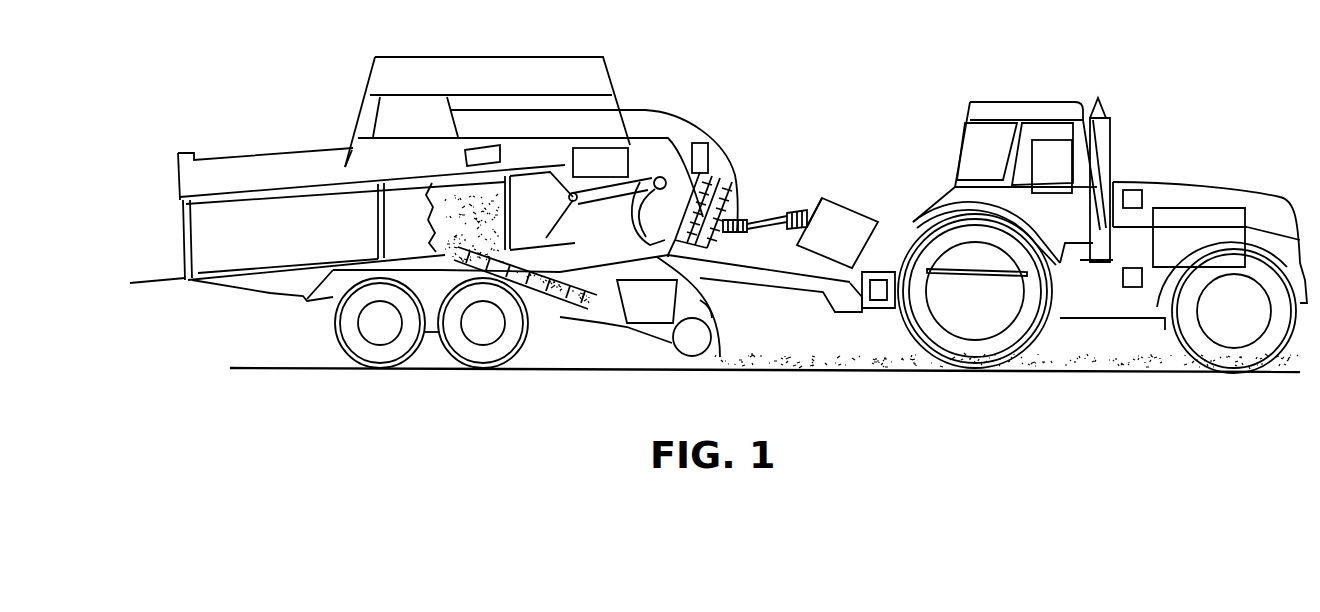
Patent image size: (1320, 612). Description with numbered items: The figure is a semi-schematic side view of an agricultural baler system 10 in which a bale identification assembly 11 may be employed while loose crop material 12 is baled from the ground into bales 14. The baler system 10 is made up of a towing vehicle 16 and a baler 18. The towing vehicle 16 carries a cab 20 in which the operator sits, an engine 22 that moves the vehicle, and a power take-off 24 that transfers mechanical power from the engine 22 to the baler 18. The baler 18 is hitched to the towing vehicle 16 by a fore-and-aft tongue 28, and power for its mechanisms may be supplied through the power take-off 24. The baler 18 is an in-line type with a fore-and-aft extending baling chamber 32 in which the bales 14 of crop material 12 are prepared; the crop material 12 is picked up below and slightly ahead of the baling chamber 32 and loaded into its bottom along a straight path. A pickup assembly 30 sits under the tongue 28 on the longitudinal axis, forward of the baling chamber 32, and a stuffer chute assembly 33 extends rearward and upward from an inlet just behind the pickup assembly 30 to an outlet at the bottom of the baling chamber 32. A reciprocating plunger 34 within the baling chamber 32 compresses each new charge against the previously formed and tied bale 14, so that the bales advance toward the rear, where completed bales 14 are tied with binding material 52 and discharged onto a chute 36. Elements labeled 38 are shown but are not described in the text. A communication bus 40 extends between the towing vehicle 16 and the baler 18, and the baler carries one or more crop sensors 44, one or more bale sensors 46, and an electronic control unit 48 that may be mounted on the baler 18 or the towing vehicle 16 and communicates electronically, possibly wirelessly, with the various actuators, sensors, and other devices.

The agricultural baler system 10 is at (1168, 58).
The bale identification assembly 11 is at (478, 143).
The crop material 12 is at (748, 346).
The bale 14 is at (292, 248).
The towing vehicle 16 is at (1208, 152).
The baler 18 is at (746, 114).
The cab 20 is at (1036, 92).
The engine 22 is at (1223, 217).
The power take-off 24 is at (998, 284).
The tongue 28 is at (760, 258).
The pickup assembly 30 is at (660, 355).
The baling chamber 32 is at (460, 205).
The stuffer chute assembly 33 is at (655, 345).
The plunger 34 is at (553, 223).
The chute 36 is at (278, 152).
The lift cylinder 38 is at (716, 172).
The communication bus 40 is at (1066, 179).
The crop sensor 44 is at (717, 373).
The bale sensor 46 is at (692, 138).
The electronic control unit 48 is at (614, 174).
The binding material 52 is at (632, 203).